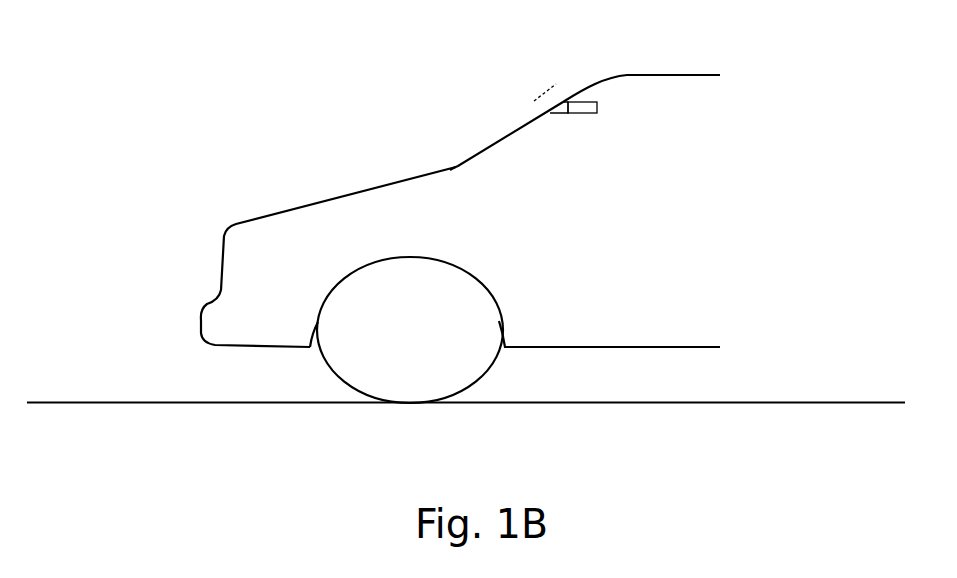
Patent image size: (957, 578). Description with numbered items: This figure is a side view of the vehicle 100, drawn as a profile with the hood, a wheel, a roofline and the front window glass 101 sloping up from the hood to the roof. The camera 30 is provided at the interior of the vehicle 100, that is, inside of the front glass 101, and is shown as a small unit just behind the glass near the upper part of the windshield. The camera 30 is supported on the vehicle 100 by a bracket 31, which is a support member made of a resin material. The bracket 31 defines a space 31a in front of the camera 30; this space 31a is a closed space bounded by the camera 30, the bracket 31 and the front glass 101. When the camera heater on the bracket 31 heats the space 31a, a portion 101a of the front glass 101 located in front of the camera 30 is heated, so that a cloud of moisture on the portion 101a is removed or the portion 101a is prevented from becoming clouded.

The vehicle 100 is at (134, 260).
The front window glass 101 is at (510, 134).
The portion of the front glass 101a is at (553, 91).
The camera 30 is at (597, 107).
The bracket 31 is at (563, 114).
The space 31a is at (565, 102).